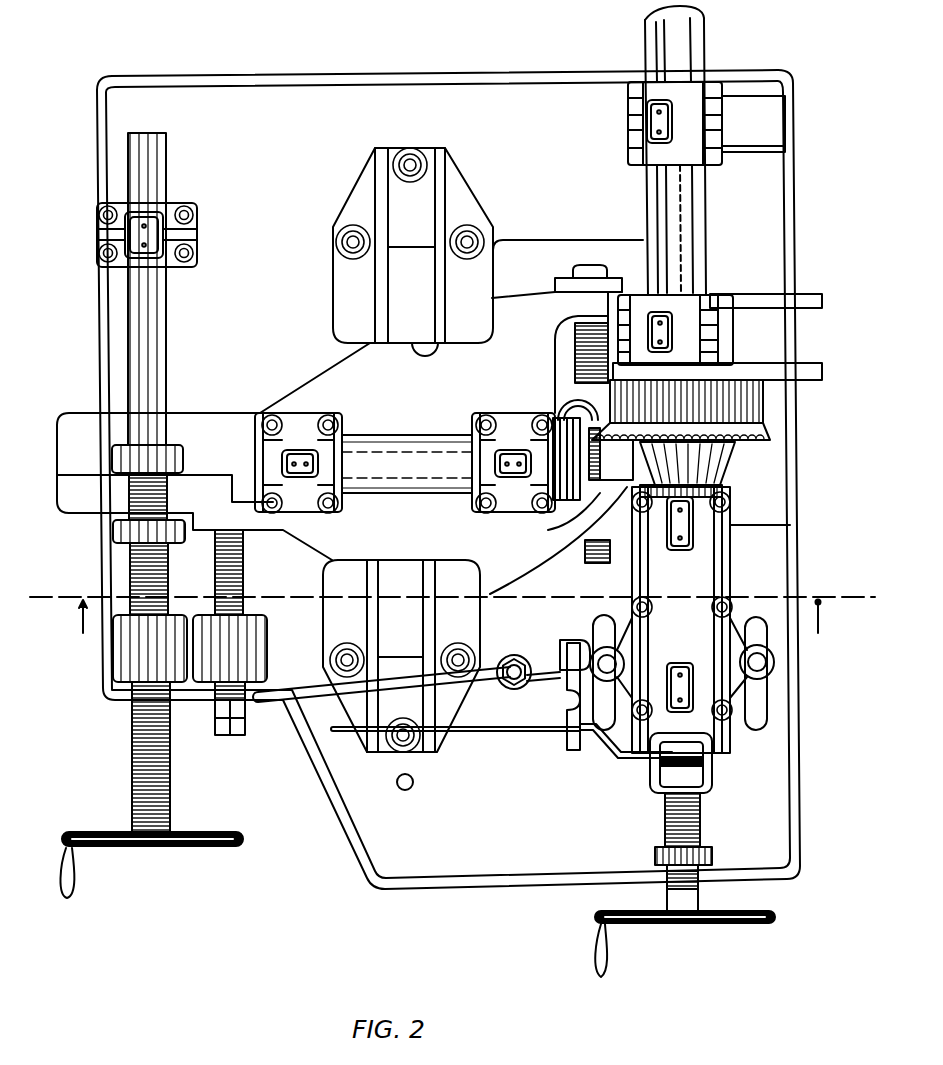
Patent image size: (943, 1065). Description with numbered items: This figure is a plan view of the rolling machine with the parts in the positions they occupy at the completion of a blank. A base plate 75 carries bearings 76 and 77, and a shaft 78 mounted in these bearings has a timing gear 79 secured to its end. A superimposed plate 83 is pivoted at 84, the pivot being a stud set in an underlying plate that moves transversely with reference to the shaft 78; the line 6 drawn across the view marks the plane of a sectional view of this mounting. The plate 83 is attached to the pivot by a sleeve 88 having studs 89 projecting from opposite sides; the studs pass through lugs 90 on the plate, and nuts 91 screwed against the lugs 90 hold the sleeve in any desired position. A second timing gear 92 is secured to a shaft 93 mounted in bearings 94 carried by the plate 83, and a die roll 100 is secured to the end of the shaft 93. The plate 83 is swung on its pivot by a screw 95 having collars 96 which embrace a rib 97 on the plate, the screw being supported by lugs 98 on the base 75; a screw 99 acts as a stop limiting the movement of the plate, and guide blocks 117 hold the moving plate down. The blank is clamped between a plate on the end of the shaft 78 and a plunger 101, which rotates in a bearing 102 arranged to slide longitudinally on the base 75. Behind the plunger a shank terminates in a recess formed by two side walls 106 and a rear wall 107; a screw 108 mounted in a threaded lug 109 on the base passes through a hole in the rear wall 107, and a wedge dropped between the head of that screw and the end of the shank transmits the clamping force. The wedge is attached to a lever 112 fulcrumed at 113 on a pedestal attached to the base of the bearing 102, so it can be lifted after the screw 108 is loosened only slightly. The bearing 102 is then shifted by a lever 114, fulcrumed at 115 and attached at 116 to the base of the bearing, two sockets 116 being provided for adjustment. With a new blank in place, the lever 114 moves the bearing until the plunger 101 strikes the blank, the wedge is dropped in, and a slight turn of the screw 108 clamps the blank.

The base plate 75 is at (456, 866).
The section line 6- 6 is at (452, 609).
The bearing 76 is at (722, 335).
The bearing 77 is at (700, 123).
The shaft 78 is at (688, 207).
The timing gear 79 is at (760, 427).
The superimposed plate 83 is at (372, 373).
The pivot 84 is at (578, 413).
The sleeve 88 is at (570, 383).
The studs 89 is at (574, 352).
The lugs 90 is at (600, 305).
The nuts 91 is at (565, 280).
The timing gear 92 is at (573, 513).
The shaft 93 is at (400, 450).
The bearings 94 is at (470, 490).
The screw 95 is at (168, 303).
The collars 96 is at (112, 452).
The rib 97 is at (205, 483).
The lugs 98 is at (116, 237).
The screw 99 is at (240, 567).
The die roll 100 is at (634, 484).
The plunger 101 is at (700, 462).
The bearing 102 is at (710, 562).
The side walls 106 is at (682, 779).
The rear wall 107 is at (703, 790).
The screw 108 is at (693, 900).
The threaded lug 109 is at (657, 855).
The lever 112 is at (508, 733).
The fulcrum 113 is at (584, 727).
The lever 114 is at (298, 692).
The fulcrum 115 is at (514, 660).
The sockets 116 is at (600, 650).
The guide blocks 117 is at (355, 303).